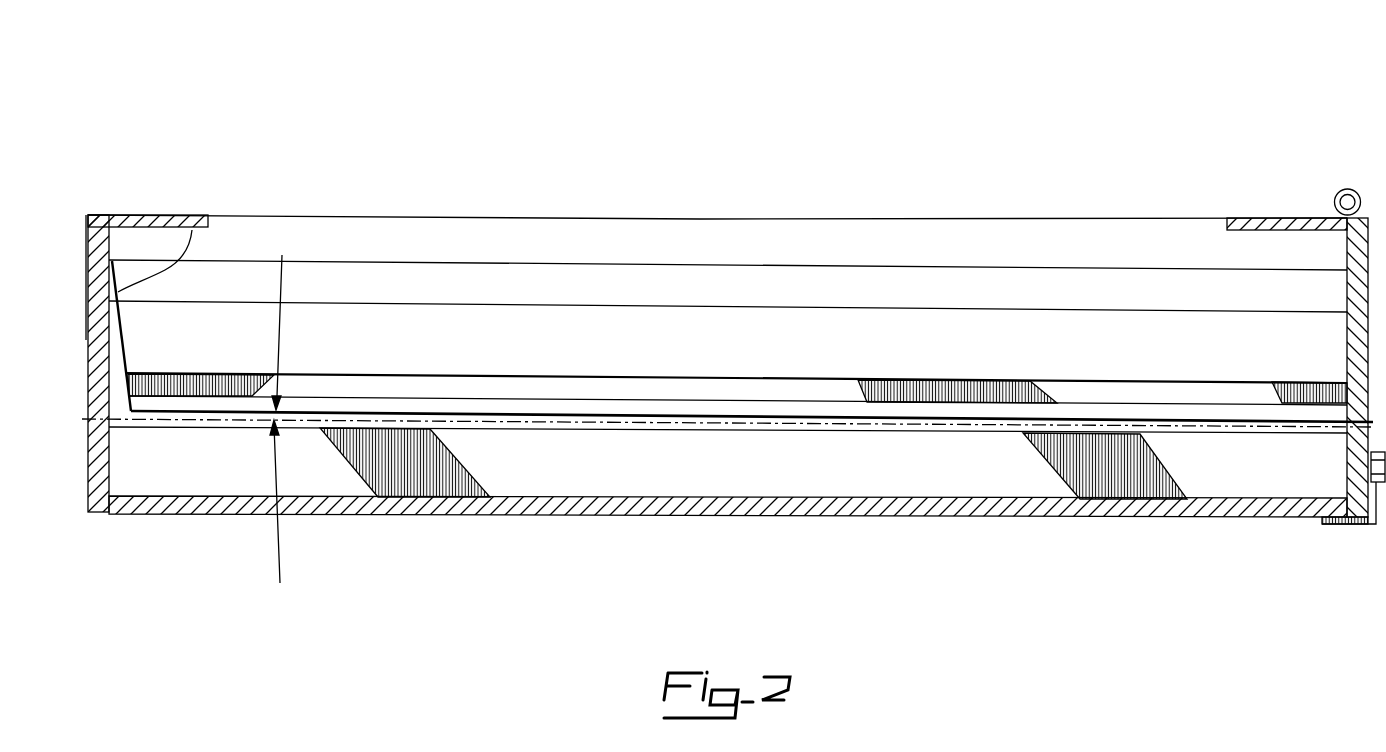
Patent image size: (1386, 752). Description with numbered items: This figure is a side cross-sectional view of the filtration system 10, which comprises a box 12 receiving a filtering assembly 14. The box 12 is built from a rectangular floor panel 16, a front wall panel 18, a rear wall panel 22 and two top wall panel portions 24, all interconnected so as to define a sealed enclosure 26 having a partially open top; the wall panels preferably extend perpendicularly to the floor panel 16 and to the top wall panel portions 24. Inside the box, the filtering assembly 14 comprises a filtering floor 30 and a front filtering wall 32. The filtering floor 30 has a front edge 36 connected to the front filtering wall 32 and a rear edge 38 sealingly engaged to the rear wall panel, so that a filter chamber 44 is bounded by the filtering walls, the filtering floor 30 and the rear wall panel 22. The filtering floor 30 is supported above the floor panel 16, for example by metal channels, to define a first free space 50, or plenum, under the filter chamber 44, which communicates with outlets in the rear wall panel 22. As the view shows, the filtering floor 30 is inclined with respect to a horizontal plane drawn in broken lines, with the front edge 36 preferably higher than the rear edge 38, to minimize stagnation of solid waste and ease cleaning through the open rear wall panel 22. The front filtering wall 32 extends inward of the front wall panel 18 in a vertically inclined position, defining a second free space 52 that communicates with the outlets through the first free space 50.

The filtration system 10 is at (706, 138).
The box 12 is at (1371, 202).
The filtering assembly 14 is at (1034, 253).
The floor panel 16 is at (1205, 518).
The front wall panel 18 is at (94, 478).
The rear wall panel 22 is at (1360, 519).
The top wall panel portions 24 is at (140, 215).
The sealed enclosure 26 is at (545, 517).
The filtering floor 30 is at (492, 436).
The front filtering wall 32 is at (192, 230).
The front edge 36 is at (132, 413).
The rear edge 38 is at (1340, 425).
The filter chamber 44 is at (466, 325).
The first free space 50 is at (820, 483).
The second free space 52 is at (87, 215).